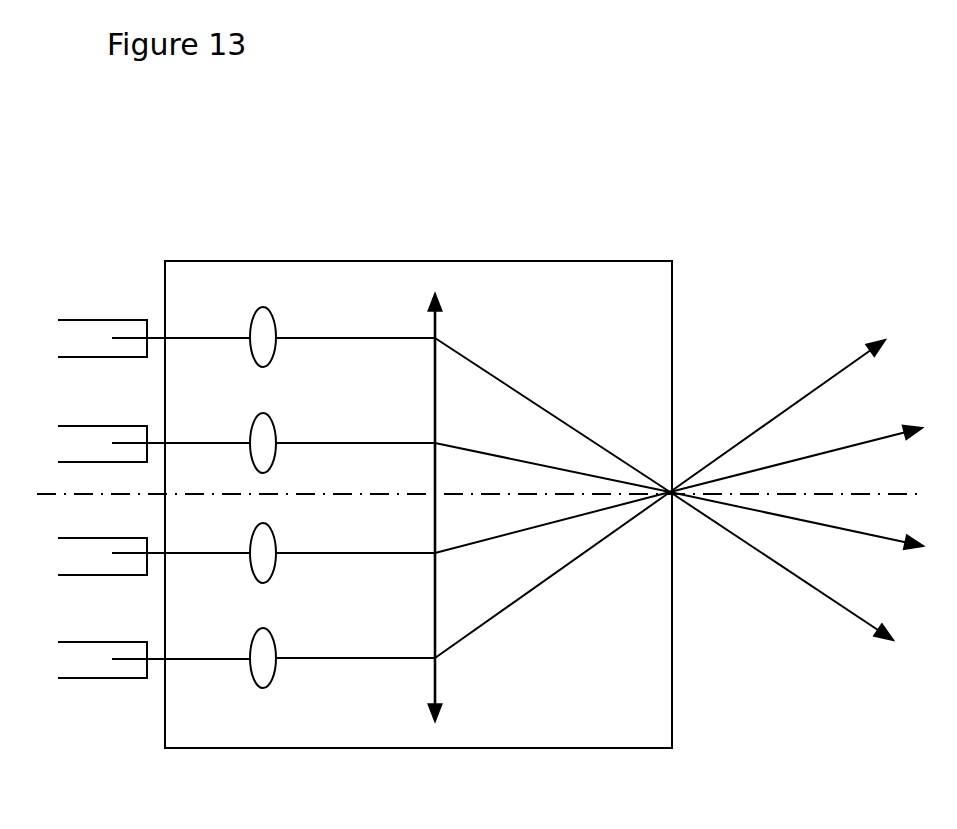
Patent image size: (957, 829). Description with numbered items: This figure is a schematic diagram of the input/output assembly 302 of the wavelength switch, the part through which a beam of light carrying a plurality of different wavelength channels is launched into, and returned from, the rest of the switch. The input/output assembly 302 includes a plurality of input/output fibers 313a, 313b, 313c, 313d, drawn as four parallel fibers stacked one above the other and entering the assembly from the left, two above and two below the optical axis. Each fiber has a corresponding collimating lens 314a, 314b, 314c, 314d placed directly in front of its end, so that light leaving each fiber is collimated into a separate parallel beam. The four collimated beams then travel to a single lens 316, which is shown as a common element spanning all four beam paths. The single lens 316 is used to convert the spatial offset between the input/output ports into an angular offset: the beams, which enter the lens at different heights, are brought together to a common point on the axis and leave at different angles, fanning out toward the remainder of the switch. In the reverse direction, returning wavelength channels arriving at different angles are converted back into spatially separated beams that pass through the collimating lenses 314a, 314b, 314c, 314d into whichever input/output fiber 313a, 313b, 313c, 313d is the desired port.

The input/output assembly 302 is at (742, 264).
The input/output fiber 313a is at (75, 320).
The input/output fiber 313b is at (77, 426).
The input/output fiber 313c is at (104, 622).
The input/output fiber 313d is at (77, 679).
The collimating lens 314a is at (272, 313).
The collimating lens 314b is at (272, 420).
The collimating lens 314c is at (275, 570).
The collimating lens 314d is at (273, 677).
The single lens 316 is at (437, 312).